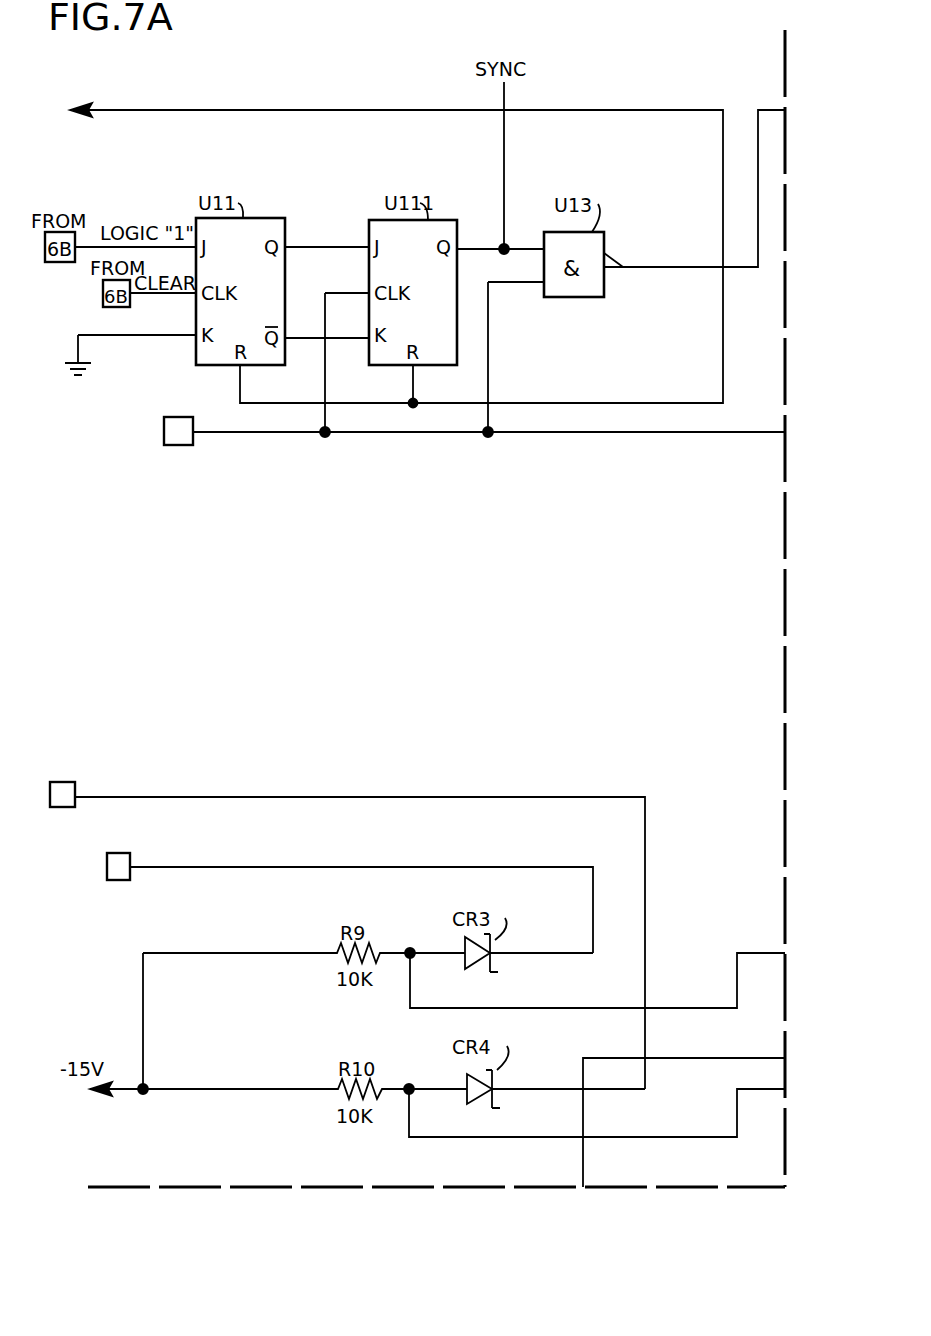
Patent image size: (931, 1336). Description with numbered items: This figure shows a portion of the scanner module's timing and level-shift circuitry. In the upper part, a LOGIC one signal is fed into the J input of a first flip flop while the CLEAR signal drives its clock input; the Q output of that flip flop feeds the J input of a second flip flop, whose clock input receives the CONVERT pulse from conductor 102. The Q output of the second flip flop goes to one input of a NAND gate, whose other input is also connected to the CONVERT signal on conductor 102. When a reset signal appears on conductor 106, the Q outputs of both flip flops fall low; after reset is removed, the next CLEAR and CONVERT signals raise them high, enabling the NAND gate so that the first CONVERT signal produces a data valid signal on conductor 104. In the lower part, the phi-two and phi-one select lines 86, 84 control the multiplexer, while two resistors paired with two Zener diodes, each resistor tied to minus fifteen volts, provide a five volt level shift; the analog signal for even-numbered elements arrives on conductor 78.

The conductor 106 is at (396, 110).
The conductor 104 is at (688, 267).
The conductor 102 is at (722, 432).
The select line 86 is at (396, 797).
The select line 84 is at (463, 867).
The conductor 78 is at (583, 1105).